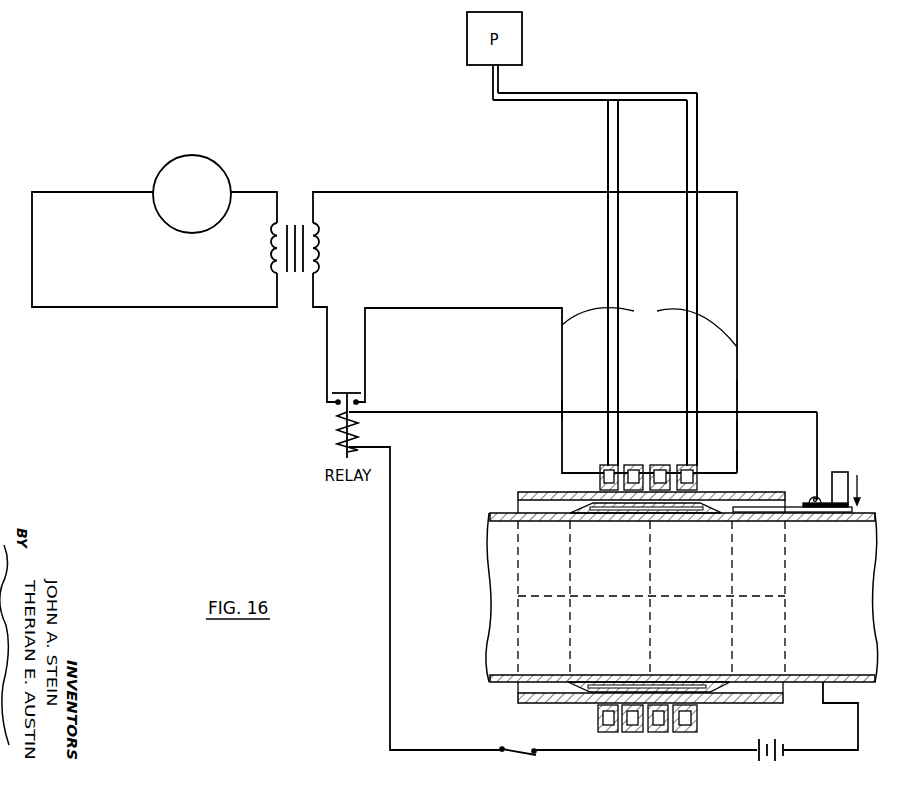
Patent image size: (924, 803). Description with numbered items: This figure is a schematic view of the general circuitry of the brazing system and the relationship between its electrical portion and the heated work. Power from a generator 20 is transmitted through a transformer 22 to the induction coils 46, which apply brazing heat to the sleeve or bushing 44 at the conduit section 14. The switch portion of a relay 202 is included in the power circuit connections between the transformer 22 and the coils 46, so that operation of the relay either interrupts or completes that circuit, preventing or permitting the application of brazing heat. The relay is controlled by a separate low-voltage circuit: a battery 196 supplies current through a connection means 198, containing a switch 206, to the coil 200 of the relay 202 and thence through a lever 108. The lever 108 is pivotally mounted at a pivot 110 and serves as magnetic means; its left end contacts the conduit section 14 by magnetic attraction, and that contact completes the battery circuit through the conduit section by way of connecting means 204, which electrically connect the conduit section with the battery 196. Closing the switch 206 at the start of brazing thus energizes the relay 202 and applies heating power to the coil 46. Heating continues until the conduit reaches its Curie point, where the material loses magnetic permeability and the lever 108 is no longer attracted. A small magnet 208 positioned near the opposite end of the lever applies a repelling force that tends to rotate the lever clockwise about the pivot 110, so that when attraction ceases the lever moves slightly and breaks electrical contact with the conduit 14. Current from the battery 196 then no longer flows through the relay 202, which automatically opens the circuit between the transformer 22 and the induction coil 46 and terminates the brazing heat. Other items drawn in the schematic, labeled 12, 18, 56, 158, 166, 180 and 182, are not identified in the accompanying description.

The liner plate 12 is at (595, 522).
The conduit section 14 is at (768, 522).
The tube assembly 18 is at (687, 338).
The generator 20 is at (179, 163).
The transformer 22 is at (290, 220).
The sleeve or bushing 44 is at (690, 522).
The induction coil 46 is at (615, 470).
The plate 56 is at (533, 491).
The lever 108 is at (801, 505).
The pivot 110 is at (813, 497).
The electrode 158 is at (741, 326).
The housing 166 is at (560, 342).
The tube 180 is at (686, 222).
The tube 182 is at (606, 224).
The battery 196 is at (773, 757).
The connection means 198 is at (605, 752).
The coil 200 is at (352, 441).
The relay 202 is at (333, 426).
The connecting means 204 is at (859, 726).
The switch 206 is at (514, 750).
The magnet 208 is at (847, 473).